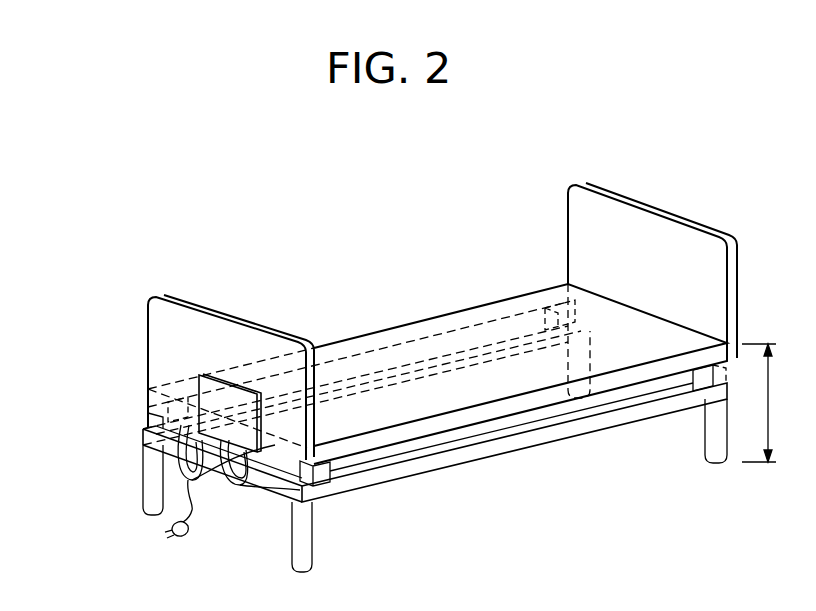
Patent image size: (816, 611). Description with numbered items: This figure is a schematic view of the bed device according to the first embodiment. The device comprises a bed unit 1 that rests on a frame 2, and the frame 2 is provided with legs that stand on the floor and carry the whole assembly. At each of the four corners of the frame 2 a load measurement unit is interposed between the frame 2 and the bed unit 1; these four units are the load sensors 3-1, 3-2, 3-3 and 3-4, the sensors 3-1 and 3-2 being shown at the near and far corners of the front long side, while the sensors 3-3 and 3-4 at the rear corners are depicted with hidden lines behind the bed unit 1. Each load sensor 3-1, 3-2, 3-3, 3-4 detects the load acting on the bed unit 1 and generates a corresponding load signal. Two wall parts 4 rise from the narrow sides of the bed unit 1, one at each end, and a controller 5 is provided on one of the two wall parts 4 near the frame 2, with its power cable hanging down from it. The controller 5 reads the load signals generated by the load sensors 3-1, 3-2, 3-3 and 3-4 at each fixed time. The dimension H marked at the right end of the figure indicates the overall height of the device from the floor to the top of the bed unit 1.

The bed unit 1 is at (435, 398).
The frame 2 is at (290, 490).
The load measurement unit 3-1 is at (318, 478).
The load measurement unit 3-2 is at (712, 380).
The load measurement unit 3-3 is at (165, 414).
The load measurement unit 3-4 is at (560, 307).
The wall part 4 is at (202, 330).
The controller 5 is at (197, 380).
The height dimension H is at (767, 403).